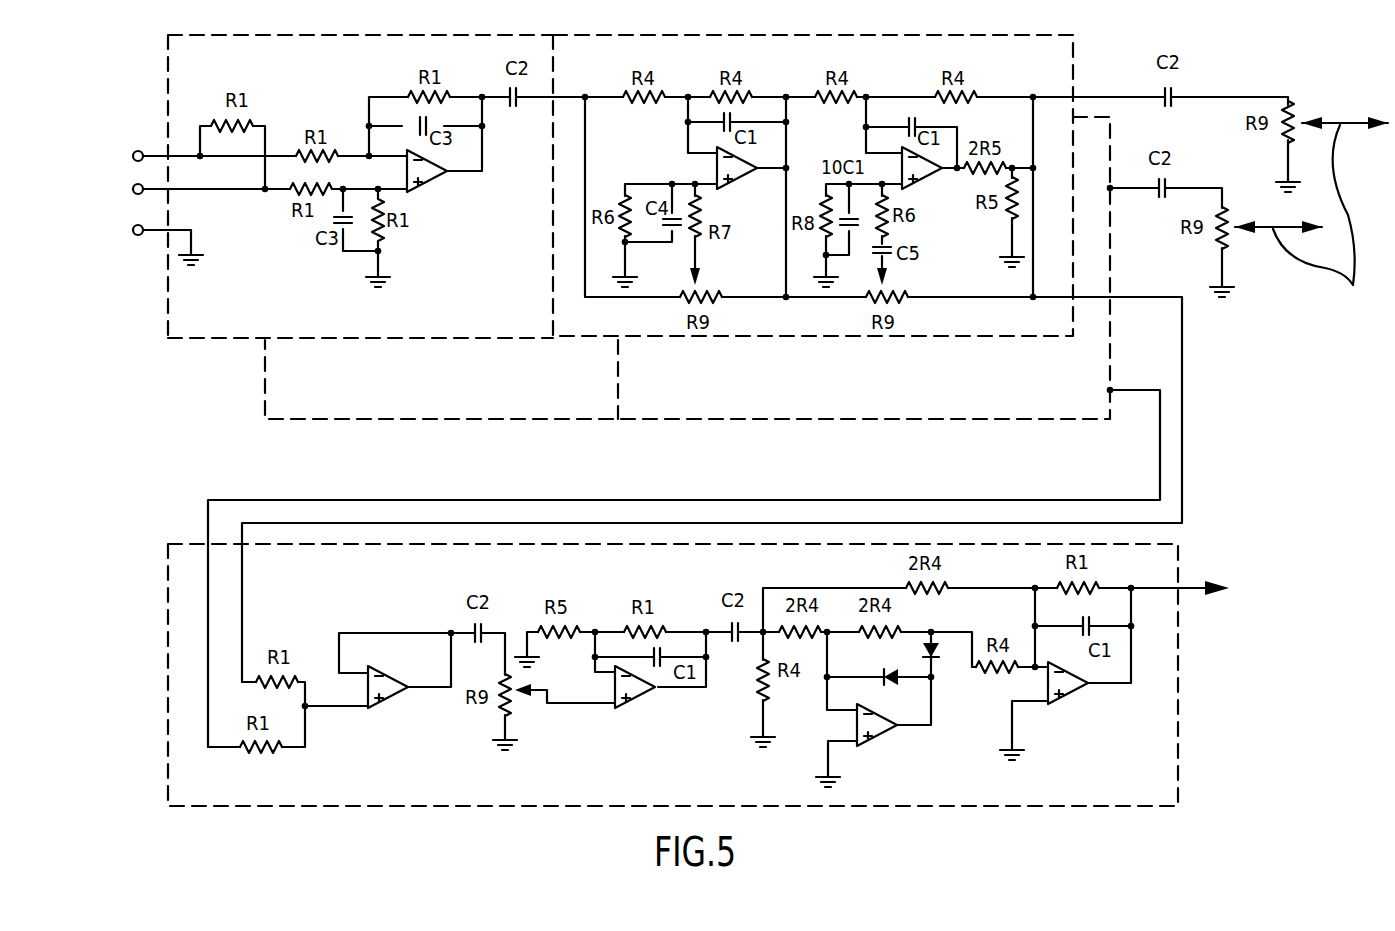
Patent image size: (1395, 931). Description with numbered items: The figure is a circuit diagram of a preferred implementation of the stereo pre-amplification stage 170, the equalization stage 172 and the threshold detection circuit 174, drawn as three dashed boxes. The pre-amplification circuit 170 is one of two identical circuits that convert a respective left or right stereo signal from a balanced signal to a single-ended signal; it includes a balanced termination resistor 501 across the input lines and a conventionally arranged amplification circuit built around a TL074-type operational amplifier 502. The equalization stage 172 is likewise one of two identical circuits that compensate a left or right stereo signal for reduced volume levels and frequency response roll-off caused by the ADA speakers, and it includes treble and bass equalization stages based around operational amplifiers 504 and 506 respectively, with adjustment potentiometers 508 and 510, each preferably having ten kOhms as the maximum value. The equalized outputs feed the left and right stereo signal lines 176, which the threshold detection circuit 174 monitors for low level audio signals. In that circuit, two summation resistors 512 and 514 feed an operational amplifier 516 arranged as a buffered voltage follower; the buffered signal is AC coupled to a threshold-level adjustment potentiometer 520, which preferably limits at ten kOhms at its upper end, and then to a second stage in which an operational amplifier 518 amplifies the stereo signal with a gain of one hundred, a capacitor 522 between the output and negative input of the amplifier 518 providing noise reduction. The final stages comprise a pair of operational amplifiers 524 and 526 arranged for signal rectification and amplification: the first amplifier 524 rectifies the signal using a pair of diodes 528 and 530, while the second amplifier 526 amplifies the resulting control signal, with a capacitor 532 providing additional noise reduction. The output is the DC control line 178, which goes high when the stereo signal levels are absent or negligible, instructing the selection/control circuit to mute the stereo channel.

The stereo pre-amplification stage 170 is at (277, 397).
The equalization stage 172 is at (1023, 325).
The threshold detection circuit 174 is at (1180, 733).
The stereo signal lines 176 is at (1311, 219).
The DC control line 178 is at (1185, 590).
The balanced termination resistor 501 is at (257, 117).
The operational amplifier 502 is at (420, 187).
The operational amplifier 504 is at (742, 180).
The operational amplifier 506 is at (933, 182).
The potentiometer 508 is at (722, 303).
The potentiometer 510 is at (903, 303).
The summation resistor 512 is at (258, 678).
The summation resistor 514 is at (290, 750).
The operational amplifier 516 is at (373, 710).
The operational amplifier 518 is at (640, 708).
The threshold-level adjustment potentiometer 520 is at (513, 703).
The capacitor 522 is at (662, 672).
The operational amplifier 524 is at (890, 727).
The operational amplifier 526 is at (1065, 693).
The diode 528 is at (895, 668).
The diode 530 is at (936, 650).
The capacitor 532 is at (1107, 683).